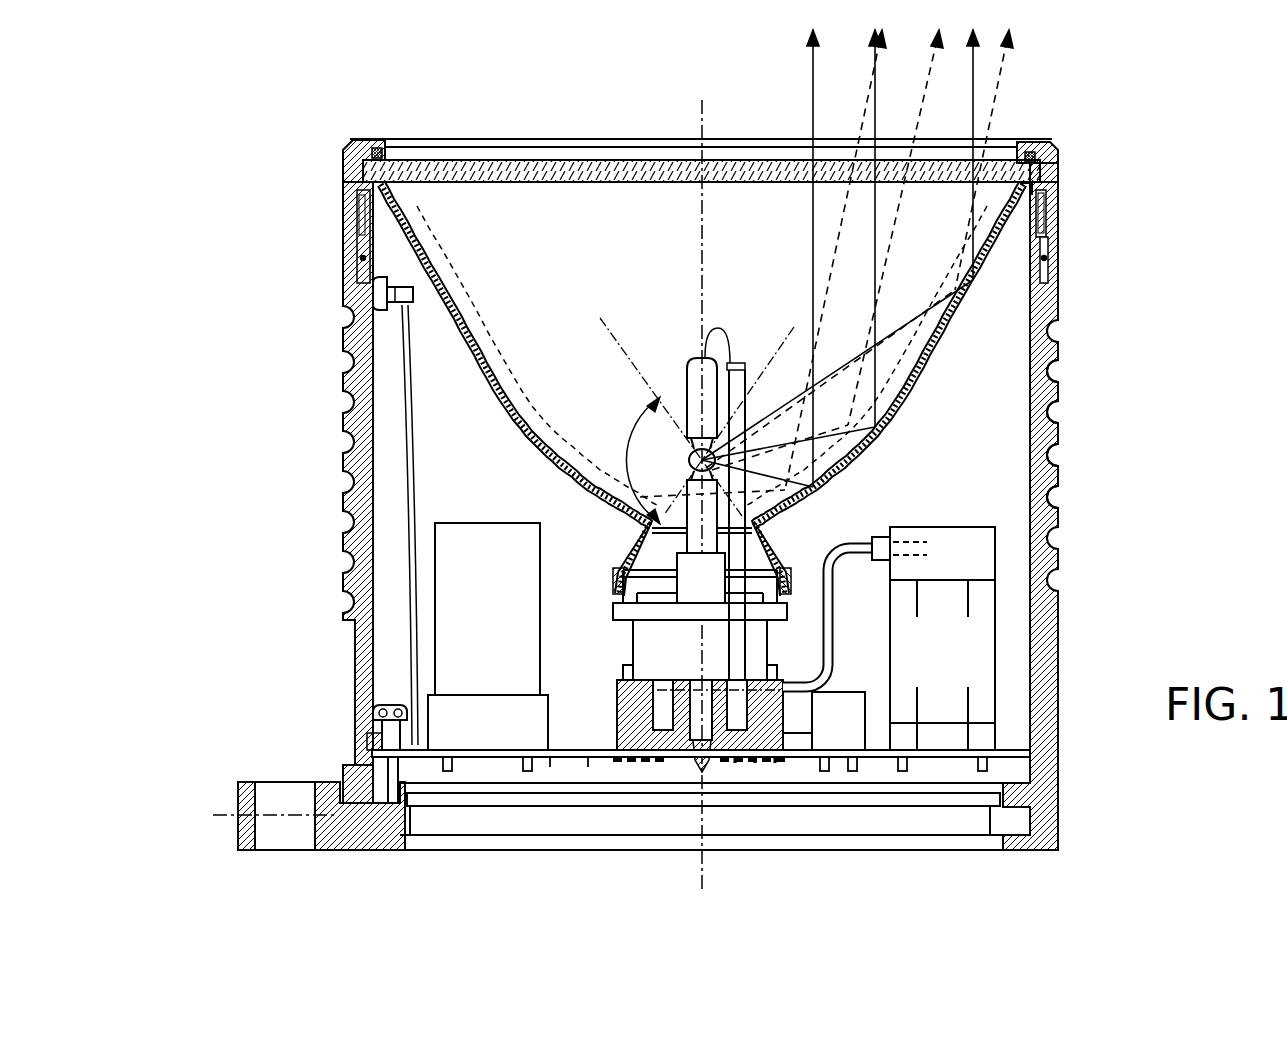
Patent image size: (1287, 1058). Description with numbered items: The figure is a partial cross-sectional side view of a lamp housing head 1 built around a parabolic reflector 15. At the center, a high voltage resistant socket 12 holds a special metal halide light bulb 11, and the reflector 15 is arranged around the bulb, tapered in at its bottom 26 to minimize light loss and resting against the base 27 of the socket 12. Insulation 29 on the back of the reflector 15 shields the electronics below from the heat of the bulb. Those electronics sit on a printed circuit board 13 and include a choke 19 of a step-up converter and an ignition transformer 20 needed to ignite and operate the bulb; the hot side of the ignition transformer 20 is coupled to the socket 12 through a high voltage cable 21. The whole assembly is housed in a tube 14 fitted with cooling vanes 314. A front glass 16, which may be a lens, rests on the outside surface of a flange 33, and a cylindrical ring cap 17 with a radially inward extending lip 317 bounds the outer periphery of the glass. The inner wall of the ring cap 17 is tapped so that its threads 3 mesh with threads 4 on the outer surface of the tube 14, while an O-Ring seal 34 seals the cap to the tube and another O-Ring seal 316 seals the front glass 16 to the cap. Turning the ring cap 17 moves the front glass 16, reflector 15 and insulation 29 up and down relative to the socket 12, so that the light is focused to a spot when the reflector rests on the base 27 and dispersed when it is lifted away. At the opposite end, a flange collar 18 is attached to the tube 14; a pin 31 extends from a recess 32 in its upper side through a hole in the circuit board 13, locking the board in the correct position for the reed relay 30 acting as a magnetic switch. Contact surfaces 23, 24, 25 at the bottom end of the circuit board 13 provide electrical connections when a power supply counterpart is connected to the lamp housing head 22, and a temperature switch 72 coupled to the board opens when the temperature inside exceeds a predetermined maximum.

The lamp housing head 1 is at (436, 97).
The threads 3 is at (1046, 214).
The threads 4 is at (1030, 197).
The metal halide light bulb 11 is at (655, 402).
The high voltage resistant socket 12 is at (620, 703).
The printed circuit board 13 is at (1032, 758).
The tube 14 is at (1057, 637).
The parabolic reflector 15 is at (458, 320).
The front glass 16 is at (474, 183).
The cylindrical ring cap 17 is at (1058, 166).
The flange collar 18 is at (252, 782).
The choke 19 is at (508, 578).
The ignition transformer 20 is at (988, 563).
The high voltage cable 21 is at (832, 612).
The lamp housing head 22 is at (515, 820).
The contact surface 23 is at (738, 764).
The contact surface 24 is at (758, 764).
The contact surface 25 is at (777, 764).
The reflector bottom 26 is at (626, 540).
The socket base 27 is at (627, 612).
The insulation 29 is at (895, 427).
The reed relay 30 is at (388, 704).
The pin 31 is at (388, 770).
The recess 32 is at (378, 806).
The flange 33 is at (343, 200).
The O-Ring seal 34 is at (1050, 252).
The temperature switch 72 is at (397, 303).
The cooling vanes 314 is at (1060, 371).
The O-Ring seal 316 is at (1028, 150).
The lip 317 is at (1042, 144).